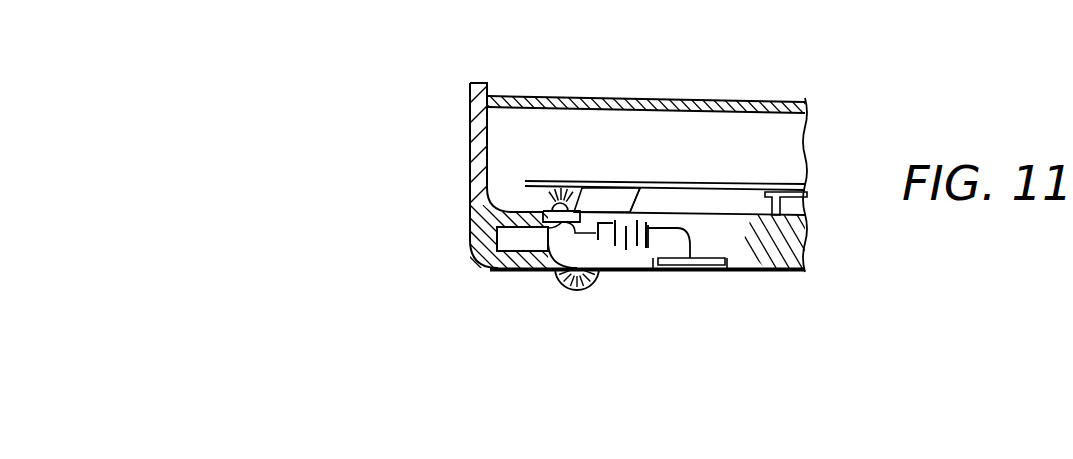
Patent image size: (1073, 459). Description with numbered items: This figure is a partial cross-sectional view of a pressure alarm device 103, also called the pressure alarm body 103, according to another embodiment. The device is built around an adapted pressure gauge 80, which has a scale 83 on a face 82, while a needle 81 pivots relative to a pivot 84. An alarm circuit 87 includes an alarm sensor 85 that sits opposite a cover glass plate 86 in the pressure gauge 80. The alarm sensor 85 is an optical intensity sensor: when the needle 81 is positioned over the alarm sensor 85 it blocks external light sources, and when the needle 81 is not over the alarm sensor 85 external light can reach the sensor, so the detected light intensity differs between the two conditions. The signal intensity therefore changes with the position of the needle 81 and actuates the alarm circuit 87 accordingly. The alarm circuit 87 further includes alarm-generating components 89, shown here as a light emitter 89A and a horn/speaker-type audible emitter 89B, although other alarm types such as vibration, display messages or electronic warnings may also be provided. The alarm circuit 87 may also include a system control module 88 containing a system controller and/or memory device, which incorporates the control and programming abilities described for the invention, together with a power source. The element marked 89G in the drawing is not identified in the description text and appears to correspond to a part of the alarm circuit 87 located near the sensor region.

The adapted pressure gauge 80 is at (470, 115).
The needle 81 is at (750, 182).
The face 82 is at (651, 209).
The scale 83 is at (514, 200).
The pivot 84 is at (807, 196).
The alarm sensor 85 is at (590, 182).
The cover glass plate 86 is at (640, 98).
The alarm circuit 87 is at (692, 231).
The system control module 88 is at (503, 270).
The alarm-generating components 89 is at (773, 339).
The light emitter 89A is at (592, 288).
The audible emitter 89B is at (702, 273).
The light guide 89G is at (640, 188).
The pressure alarm device 103 is at (460, 195).